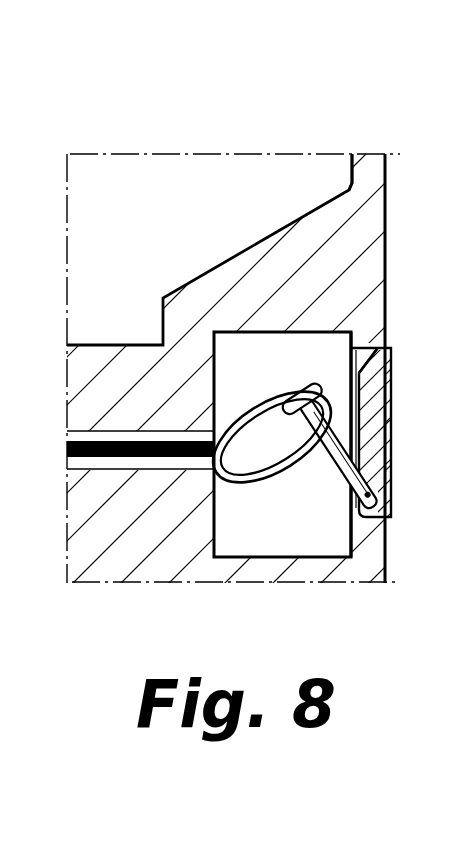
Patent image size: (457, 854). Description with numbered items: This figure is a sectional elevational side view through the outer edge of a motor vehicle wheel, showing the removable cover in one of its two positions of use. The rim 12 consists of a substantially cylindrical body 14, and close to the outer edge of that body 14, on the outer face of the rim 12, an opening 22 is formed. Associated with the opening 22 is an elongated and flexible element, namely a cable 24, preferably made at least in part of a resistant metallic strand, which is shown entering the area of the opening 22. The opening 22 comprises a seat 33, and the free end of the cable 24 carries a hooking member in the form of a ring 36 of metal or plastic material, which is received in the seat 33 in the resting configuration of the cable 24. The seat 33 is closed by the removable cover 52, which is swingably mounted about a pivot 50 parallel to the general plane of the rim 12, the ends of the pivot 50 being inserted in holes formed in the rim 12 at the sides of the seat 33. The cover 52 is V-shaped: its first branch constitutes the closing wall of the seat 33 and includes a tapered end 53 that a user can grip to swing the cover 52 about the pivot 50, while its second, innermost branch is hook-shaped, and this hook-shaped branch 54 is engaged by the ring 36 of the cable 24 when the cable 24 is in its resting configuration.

The rim 12 is at (333, 163).
The body 14 is at (317, 237).
The opening 22 is at (356, 353).
The cable 24 is at (134, 457).
The seat 33 is at (232, 333).
The ring 36 is at (248, 475).
The pivot 50 is at (263, 520).
The removable cover 52 is at (377, 420).
The tapered end 53 is at (369, 347).
The hook-shaped branch 54 is at (320, 477).